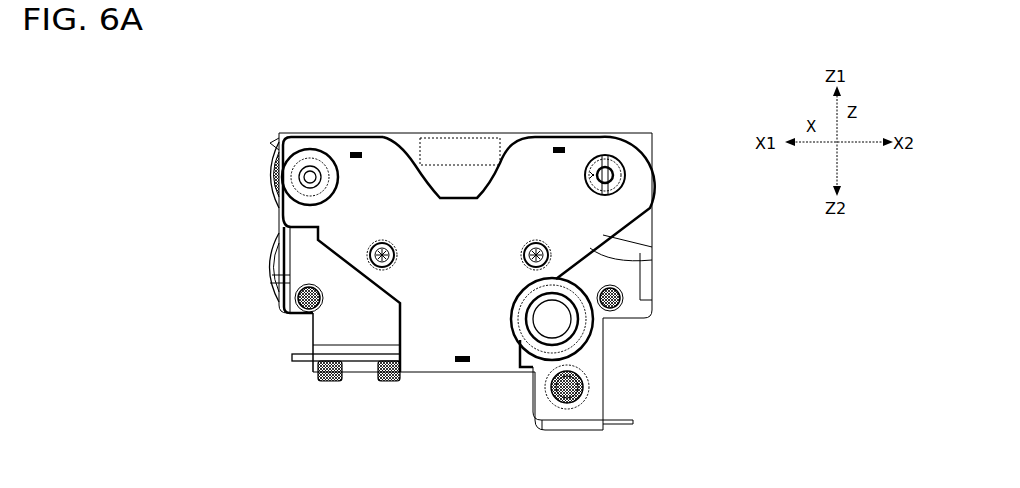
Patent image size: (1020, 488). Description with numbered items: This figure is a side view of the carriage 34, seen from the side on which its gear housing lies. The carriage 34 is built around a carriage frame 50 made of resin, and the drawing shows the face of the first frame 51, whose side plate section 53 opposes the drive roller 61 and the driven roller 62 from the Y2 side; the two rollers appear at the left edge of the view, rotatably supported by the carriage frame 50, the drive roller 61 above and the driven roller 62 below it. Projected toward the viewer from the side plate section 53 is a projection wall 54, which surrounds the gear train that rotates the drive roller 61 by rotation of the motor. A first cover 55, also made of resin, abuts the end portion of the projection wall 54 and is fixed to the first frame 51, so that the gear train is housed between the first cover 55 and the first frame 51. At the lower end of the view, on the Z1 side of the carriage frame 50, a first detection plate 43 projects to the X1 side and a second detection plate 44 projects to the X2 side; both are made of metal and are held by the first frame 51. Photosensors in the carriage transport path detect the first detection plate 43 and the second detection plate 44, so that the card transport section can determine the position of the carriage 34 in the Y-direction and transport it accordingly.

The carriage 34 is at (447, 255).
The first detection plate 43 is at (292, 362).
The second detection plate 44 is at (625, 420).
The carriage frame 50 is at (511, 179).
The first frame 51 is at (583, 179).
The side plate section 53 is at (511, 143).
The projection wall 54 is at (653, 255).
The first cover 55 is at (383, 157).
The drive roller 61 is at (264, 177).
The driven roller 62 is at (266, 262).